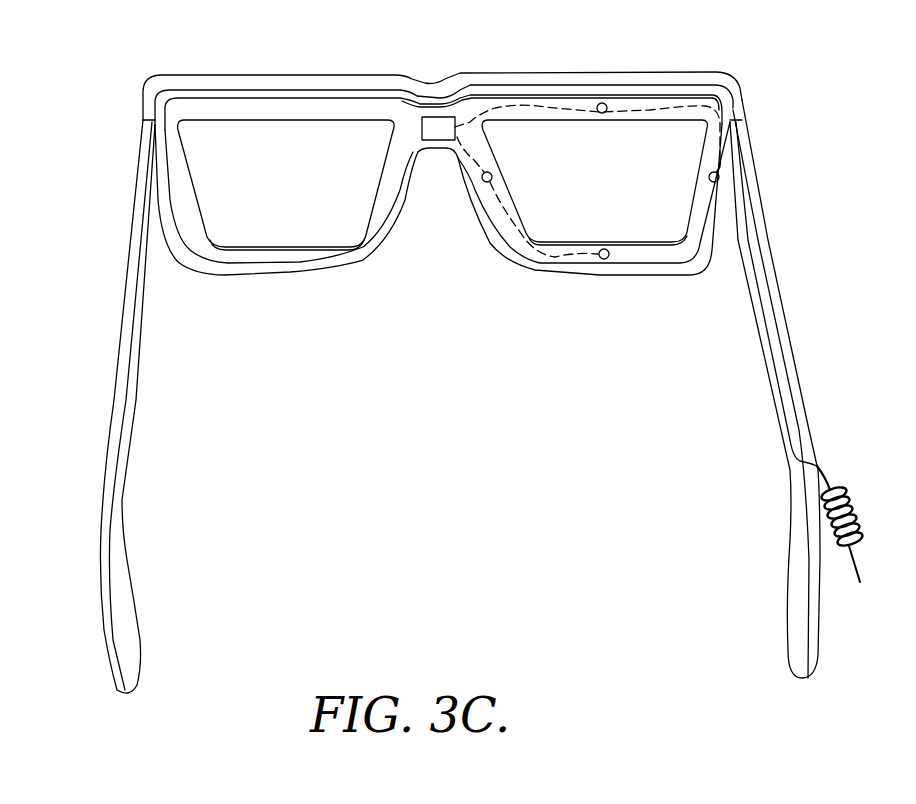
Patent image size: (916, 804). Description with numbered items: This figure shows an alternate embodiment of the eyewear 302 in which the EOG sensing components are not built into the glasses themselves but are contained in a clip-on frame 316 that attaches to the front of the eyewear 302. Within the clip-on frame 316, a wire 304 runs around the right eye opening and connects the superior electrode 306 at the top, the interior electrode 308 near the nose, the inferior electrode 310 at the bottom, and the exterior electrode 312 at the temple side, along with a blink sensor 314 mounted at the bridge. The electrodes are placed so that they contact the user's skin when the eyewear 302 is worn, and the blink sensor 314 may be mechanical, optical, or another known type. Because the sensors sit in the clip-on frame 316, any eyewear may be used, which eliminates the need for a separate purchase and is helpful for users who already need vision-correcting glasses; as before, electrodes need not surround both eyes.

The eyewear 302 is at (123, 378).
The wire 304 is at (692, 110).
The superior electrode 306 is at (601, 103).
The interior electrode 308 is at (482, 178).
The inferior electrode 310 is at (604, 259).
The exterior electrode 312 is at (719, 178).
The blink sensor 314 is at (438, 126).
The clip-on frame 316 is at (543, 97).